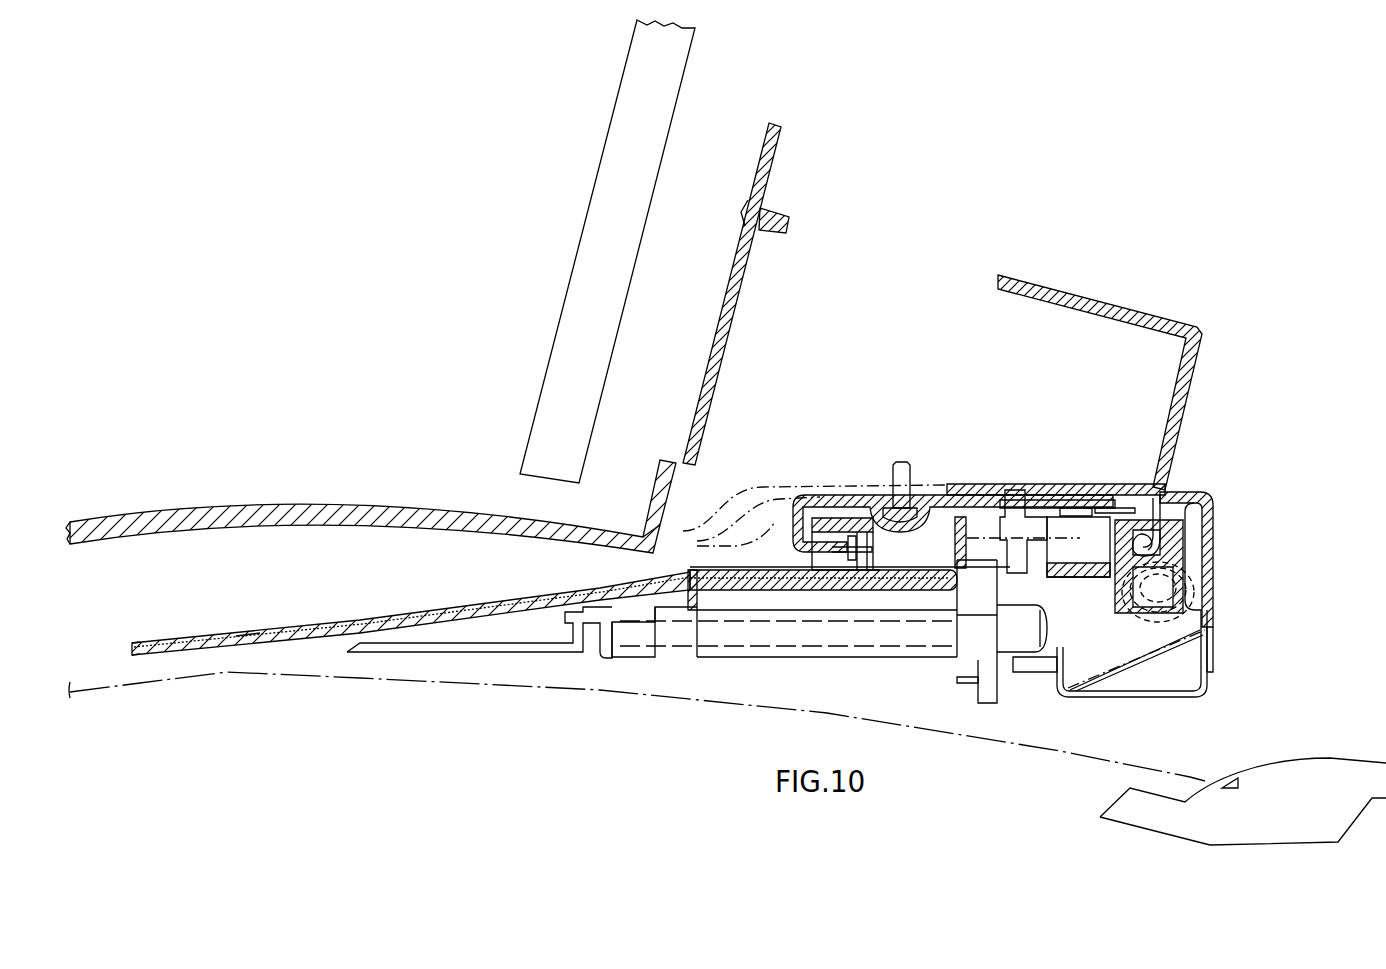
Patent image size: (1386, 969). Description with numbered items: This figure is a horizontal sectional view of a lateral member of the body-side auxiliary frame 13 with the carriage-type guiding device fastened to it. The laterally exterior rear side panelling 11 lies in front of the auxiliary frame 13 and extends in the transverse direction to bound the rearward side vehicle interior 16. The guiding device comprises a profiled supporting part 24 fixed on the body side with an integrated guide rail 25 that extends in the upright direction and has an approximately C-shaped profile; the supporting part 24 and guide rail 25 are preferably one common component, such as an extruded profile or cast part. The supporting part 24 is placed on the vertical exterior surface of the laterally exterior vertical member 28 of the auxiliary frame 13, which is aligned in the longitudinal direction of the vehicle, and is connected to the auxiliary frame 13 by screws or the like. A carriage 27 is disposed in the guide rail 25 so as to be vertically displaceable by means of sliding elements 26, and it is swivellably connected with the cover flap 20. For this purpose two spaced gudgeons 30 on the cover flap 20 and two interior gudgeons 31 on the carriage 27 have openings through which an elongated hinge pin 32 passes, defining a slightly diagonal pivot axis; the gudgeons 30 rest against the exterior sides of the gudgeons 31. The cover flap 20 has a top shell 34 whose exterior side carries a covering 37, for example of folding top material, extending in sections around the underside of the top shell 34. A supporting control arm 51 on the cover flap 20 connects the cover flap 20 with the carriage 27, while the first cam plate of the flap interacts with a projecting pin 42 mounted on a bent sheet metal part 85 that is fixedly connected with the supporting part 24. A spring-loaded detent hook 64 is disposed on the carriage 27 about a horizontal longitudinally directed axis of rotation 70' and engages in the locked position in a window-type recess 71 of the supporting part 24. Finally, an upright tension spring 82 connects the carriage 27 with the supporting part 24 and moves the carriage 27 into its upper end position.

The rearward side vehicle interior 16 is at (539, 251).
The laterally exterior rear side panelling 11 is at (281, 506).
The auxiliary frame 13 is at (1194, 389).
The cover flap 20 is at (300, 628).
The supporting part 24 is at (1212, 507).
The guide rail 25 is at (847, 507).
The sliding elements 26 is at (822, 533).
The carriage 27 is at (1127, 498).
The vertical member 28 is at (970, 485).
The gudgeons of the cover flap 30 is at (1020, 607).
The gudgeons of the carriage 31 is at (962, 650).
The hinge pin 32 is at (603, 636).
The top shell 34 is at (240, 636).
The covering 37 is at (196, 640).
The projecting pin 42 is at (1028, 670).
The supporting control arm 51 is at (968, 686).
The detent hook 64 is at (1022, 548).
The axis of rotation 70' is at (1065, 475).
The window-type recess 71 is at (1033, 495).
The tension spring 82 is at (1218, 655).
The bent sheet metal part 85 is at (1160, 698).